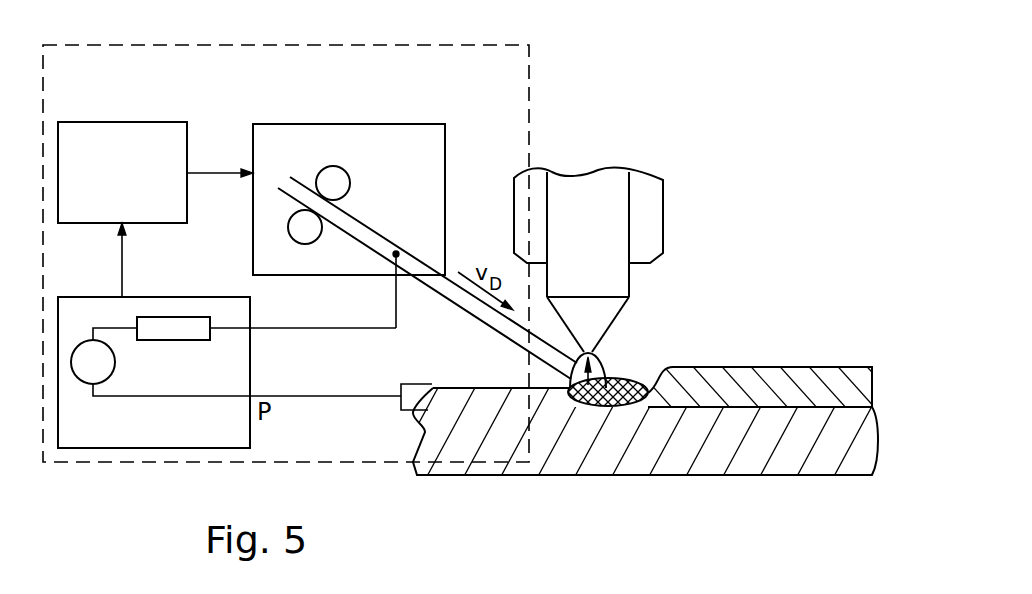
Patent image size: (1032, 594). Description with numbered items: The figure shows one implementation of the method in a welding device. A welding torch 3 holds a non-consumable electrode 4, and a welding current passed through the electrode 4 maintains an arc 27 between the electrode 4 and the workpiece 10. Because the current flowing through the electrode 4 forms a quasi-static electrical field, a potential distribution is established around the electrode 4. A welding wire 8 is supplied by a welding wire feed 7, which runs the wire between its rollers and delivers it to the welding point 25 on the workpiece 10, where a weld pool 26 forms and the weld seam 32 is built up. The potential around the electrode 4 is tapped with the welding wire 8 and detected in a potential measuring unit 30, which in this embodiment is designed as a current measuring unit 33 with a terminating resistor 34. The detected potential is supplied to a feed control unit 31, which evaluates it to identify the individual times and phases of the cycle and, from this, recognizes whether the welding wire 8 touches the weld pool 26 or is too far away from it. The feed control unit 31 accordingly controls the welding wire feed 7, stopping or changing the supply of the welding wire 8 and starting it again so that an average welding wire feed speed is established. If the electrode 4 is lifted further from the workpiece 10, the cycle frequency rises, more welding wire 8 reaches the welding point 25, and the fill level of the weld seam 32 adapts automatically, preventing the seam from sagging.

The welding torch 3 is at (647, 218).
The electrode 4 is at (581, 228).
The welding wire feed 7 is at (421, 171).
The welding wire 8 is at (494, 328).
The workpiece 10 is at (803, 442).
The welding point 25 is at (622, 424).
The weld pool 26 is at (596, 402).
The arc 27 is at (600, 360).
The potential measuring unit 30 is at (229, 344).
The feed control unit 31 is at (136, 185).
The weld seam 32 is at (812, 387).
The current measuring unit 33 is at (88, 340).
The terminating resistor 34 is at (173, 317).